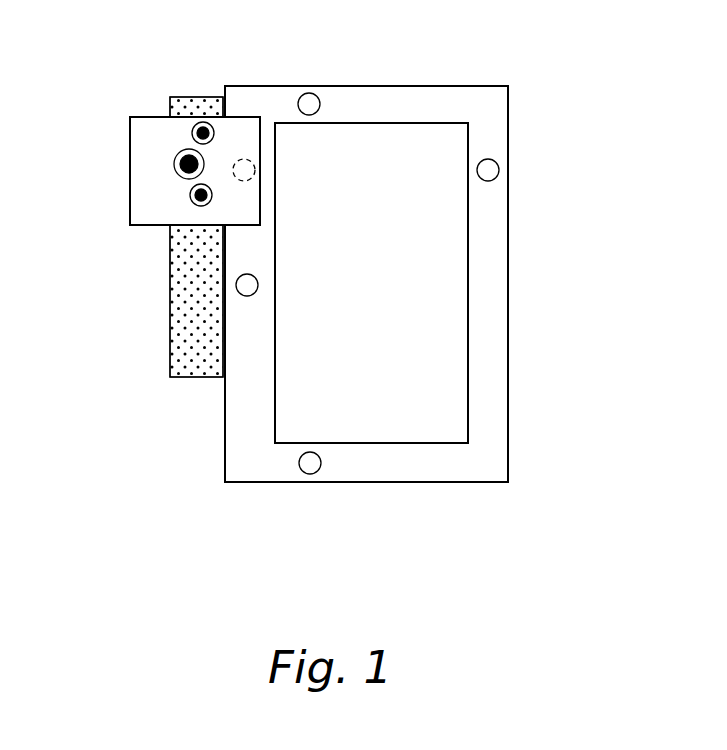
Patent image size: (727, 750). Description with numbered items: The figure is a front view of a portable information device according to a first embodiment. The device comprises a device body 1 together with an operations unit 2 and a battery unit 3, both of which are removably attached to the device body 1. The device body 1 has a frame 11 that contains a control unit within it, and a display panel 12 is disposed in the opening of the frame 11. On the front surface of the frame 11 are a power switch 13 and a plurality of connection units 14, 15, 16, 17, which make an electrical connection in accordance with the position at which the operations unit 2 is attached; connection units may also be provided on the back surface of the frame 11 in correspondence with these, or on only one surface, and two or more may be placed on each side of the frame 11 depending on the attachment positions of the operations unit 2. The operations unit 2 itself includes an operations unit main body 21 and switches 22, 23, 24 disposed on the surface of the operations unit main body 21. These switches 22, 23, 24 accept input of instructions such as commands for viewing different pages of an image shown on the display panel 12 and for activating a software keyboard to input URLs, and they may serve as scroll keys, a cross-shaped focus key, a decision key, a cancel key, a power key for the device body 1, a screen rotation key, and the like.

The device body 1 is at (428, 498).
The operations unit 2 is at (143, 142).
The battery unit 3 is at (158, 351).
The frame 11 is at (350, 470).
The display panel 12 is at (435, 412).
The power switch 13 is at (258, 283).
The connection unit 14 is at (255, 170).
The connection unit 15 is at (304, 93).
The connection unit 16 is at (499, 168).
The connection unit 17 is at (301, 473).
The operations unit main body 21 is at (140, 118).
The switch 22 is at (203, 121).
The switch 23 is at (174, 166).
The switch 24 is at (190, 199).